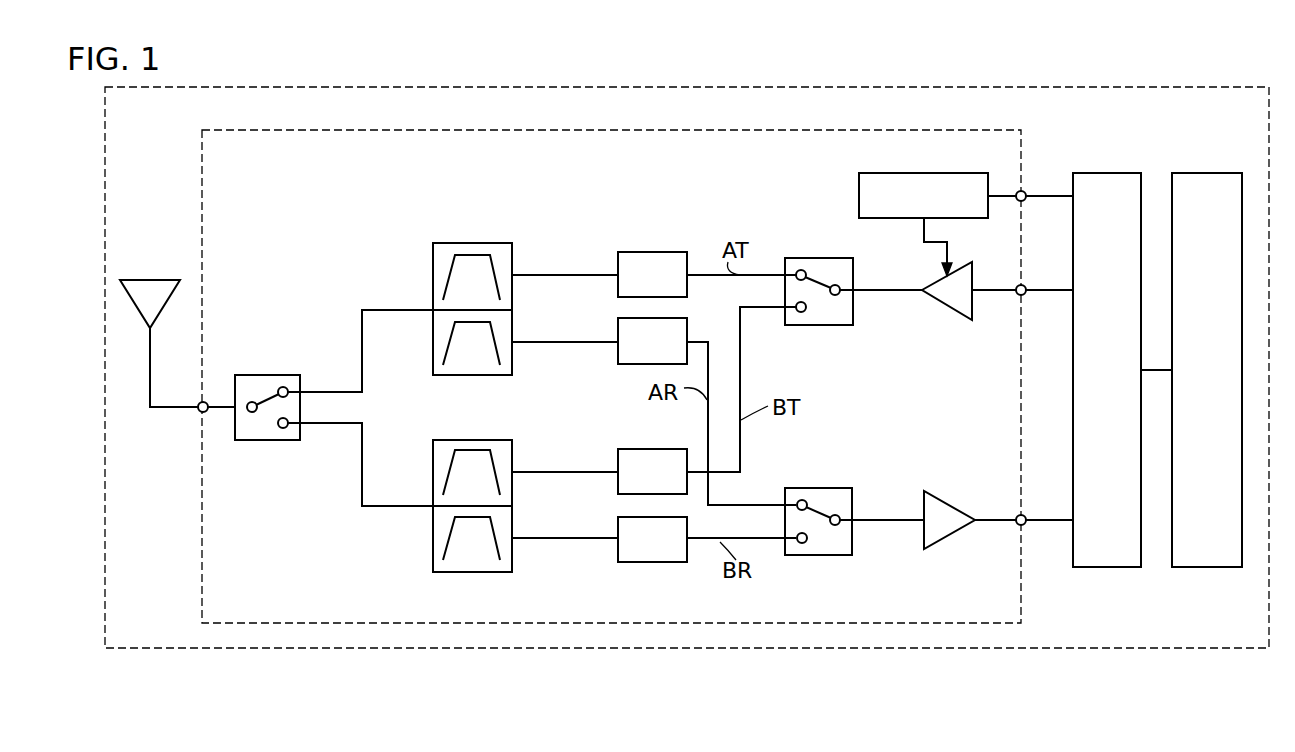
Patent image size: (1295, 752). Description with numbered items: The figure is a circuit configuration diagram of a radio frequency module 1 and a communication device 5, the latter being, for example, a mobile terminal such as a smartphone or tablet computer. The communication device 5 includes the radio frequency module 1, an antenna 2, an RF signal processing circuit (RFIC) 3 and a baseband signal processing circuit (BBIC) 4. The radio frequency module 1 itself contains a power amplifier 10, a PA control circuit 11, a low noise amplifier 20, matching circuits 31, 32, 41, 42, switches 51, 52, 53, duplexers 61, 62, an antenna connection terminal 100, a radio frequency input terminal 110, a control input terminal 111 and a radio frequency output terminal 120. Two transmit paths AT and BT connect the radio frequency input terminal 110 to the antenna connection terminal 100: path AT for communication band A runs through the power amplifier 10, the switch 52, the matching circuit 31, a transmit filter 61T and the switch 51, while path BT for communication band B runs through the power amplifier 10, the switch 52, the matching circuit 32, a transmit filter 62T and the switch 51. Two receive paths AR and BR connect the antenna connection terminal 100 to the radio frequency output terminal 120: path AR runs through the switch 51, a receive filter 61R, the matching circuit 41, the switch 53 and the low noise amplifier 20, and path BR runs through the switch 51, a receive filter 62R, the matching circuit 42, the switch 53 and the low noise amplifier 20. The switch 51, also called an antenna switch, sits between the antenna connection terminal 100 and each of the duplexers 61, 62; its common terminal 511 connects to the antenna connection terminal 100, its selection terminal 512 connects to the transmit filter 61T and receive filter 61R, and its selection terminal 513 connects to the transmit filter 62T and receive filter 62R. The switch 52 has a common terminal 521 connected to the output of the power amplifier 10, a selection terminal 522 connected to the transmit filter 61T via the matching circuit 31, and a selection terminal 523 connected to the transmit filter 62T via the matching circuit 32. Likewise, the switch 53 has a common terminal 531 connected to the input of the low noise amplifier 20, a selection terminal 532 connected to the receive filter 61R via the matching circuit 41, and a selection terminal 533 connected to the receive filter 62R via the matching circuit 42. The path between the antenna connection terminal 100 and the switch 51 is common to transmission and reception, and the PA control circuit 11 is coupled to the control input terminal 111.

The radio frequency module 1 is at (990, 131).
The antenna 2 is at (155, 280).
The RF signal processing circuit (RFIC) 3 is at (1100, 173).
The baseband signal processing circuit (BBIC) 4 is at (1200, 173).
The communication device 5 is at (1222, 86).
The power amplifier 10 is at (945, 312).
The PA control circuit 11 is at (859, 192).
The low noise amplifier 20 is at (947, 540).
The matching circuit 31 is at (657, 252).
The matching circuit 32 is at (658, 449).
The matching circuit 41 is at (640, 365).
The matching circuit 42 is at (658, 563).
The switch 51 is at (272, 406).
The terminal 511 is at (251, 413).
The terminal 512 is at (287, 386).
The terminal 513 is at (284, 430).
The switch 52 is at (826, 294).
The terminal 521 is at (838, 296).
The terminal 522 is at (800, 268).
The terminal 523 is at (800, 314).
The switch 53 is at (821, 521).
The terminal 531 is at (837, 528).
The terminal 532 is at (800, 498).
The terminal 533 is at (800, 545).
The duplexer 61 is at (523, 309).
The transmit filter 61T is at (512, 257).
The receive filter 61R is at (512, 322).
The duplexer 62 is at (523, 506).
The transmit filter 62T is at (512, 452).
The receive filter 62R is at (512, 516).
The antenna connection terminal 100 is at (200, 413).
The radio frequency input terminal 110 is at (1024, 285).
The control input terminal 111 is at (1024, 190).
The radio frequency output terminal 120 is at (1027, 527).